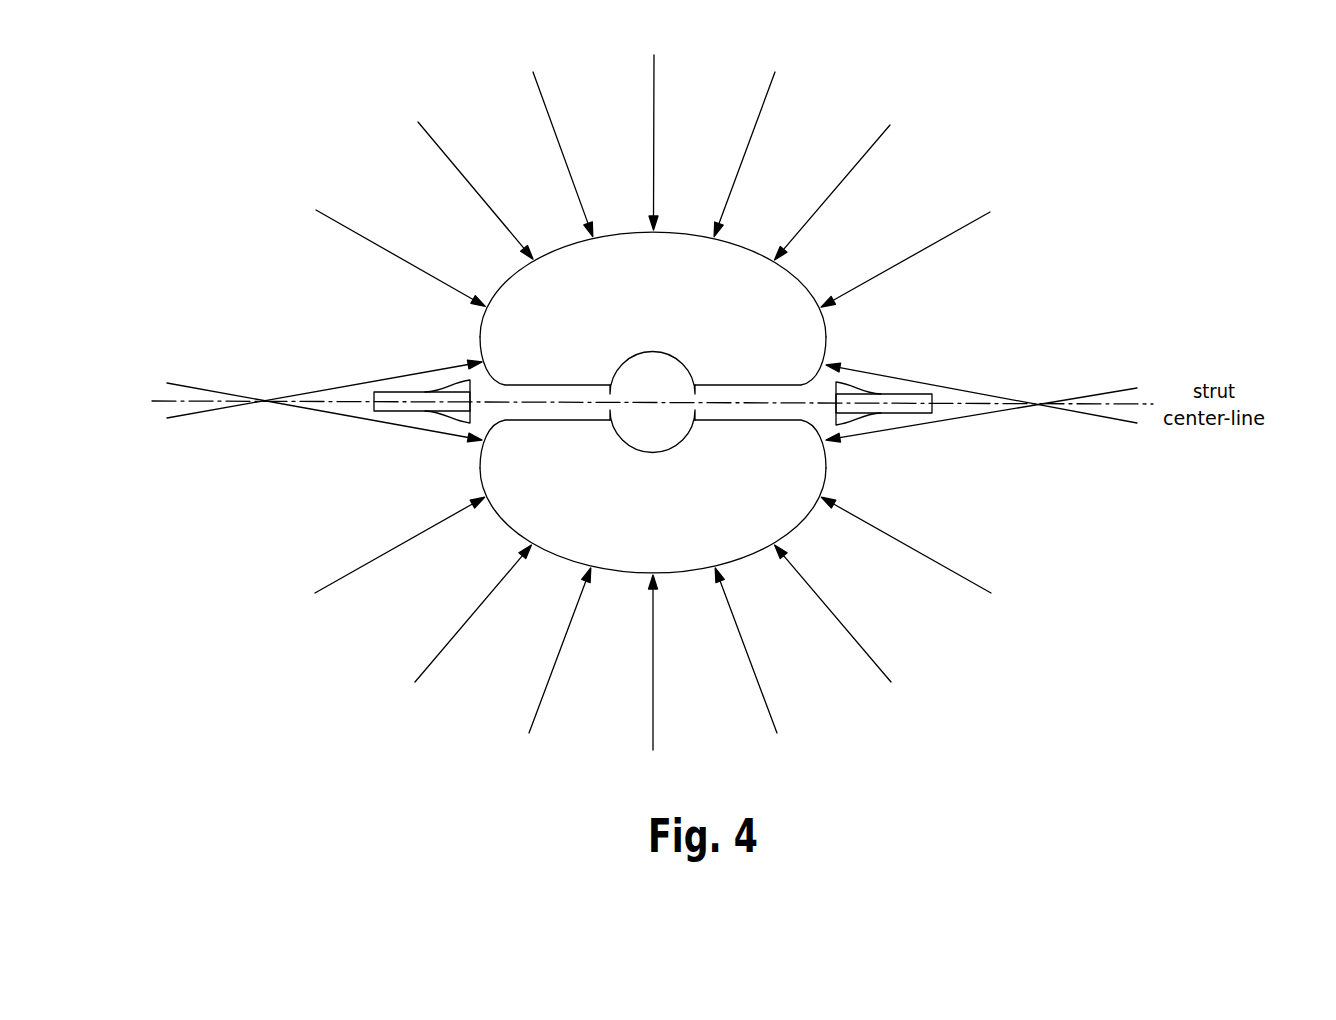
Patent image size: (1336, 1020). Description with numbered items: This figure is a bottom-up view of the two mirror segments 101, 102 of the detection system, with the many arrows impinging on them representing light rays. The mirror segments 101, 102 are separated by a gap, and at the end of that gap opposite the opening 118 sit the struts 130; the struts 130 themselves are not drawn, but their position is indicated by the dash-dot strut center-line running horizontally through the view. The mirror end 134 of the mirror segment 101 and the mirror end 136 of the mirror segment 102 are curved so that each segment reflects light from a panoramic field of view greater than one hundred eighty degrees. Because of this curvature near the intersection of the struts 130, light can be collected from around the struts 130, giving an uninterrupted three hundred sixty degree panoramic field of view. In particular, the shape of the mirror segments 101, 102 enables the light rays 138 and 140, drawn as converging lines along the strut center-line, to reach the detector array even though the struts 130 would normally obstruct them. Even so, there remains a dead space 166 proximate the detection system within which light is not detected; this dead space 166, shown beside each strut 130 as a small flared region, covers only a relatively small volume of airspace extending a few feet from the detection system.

The mirror segment 101 is at (670, 247).
The mirror segment 102 is at (658, 548).
The opening 118 is at (638, 373).
The strut 130 is at (413, 392).
The mirror end 134 is at (487, 357).
The mirror end 136 is at (492, 441).
The light ray 138 is at (198, 415).
The light ray 140 is at (198, 387).
The dead space 166 is at (446, 422).